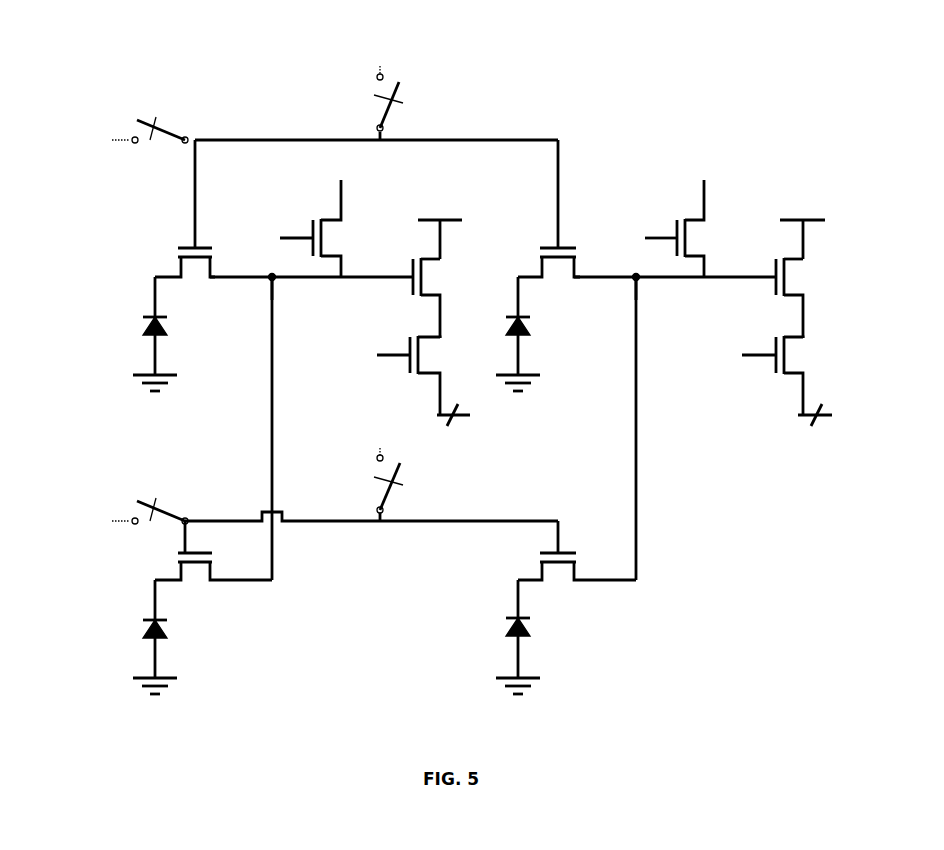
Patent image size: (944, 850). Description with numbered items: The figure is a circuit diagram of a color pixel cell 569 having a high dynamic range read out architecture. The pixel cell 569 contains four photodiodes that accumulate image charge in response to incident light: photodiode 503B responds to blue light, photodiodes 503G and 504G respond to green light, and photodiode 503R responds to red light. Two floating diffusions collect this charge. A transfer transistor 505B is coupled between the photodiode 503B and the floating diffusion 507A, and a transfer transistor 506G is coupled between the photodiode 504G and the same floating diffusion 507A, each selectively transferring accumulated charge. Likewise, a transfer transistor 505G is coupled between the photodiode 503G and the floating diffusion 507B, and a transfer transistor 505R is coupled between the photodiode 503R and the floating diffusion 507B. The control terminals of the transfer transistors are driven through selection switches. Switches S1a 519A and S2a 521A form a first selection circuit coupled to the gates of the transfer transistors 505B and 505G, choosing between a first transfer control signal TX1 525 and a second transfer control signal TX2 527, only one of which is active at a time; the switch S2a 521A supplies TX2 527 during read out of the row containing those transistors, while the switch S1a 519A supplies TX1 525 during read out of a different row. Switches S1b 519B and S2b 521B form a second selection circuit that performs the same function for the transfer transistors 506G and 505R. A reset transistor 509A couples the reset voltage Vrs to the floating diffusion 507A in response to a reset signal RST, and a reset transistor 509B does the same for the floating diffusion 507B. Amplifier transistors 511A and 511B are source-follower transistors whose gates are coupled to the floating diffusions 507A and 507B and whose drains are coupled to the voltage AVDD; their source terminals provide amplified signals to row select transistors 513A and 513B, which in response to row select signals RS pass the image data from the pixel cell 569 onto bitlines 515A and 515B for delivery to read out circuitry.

The color pixel cell 569 is at (852, 43).
The switch S2a 521A is at (172, 122).
The switch S1a 519A is at (403, 113).
The first transfer control signal TX1 525 is at (368, 50).
The second transfer control signal TX2 527 is at (85, 160).
The transfer transistor 505B is at (178, 266).
The photodiode 503B is at (168, 325).
The floating diffusion 507A is at (340, 283).
The reset transistor 509A is at (332, 250).
The amplifier transistor 511A is at (435, 271).
The row select transistor 513A is at (405, 368).
The bitline 515A is at (470, 452).
The transfer transistor 505G is at (576, 268).
The photodiode 503G is at (531, 325).
The floating diffusion 507B is at (704, 283).
The reset transistor 509B is at (695, 256).
The amplifier transistor 511B is at (805, 272).
The row select transistor 513B is at (800, 350).
The bitline 515B is at (848, 452).
The switch S2b 521B is at (172, 503).
The switch S1b 519B is at (408, 495).
The transfer transistor 506G is at (178, 572).
The photodiode 504G is at (168, 628).
The transfer transistor 505R is at (540, 572).
The photodiode 503R is at (531, 626).